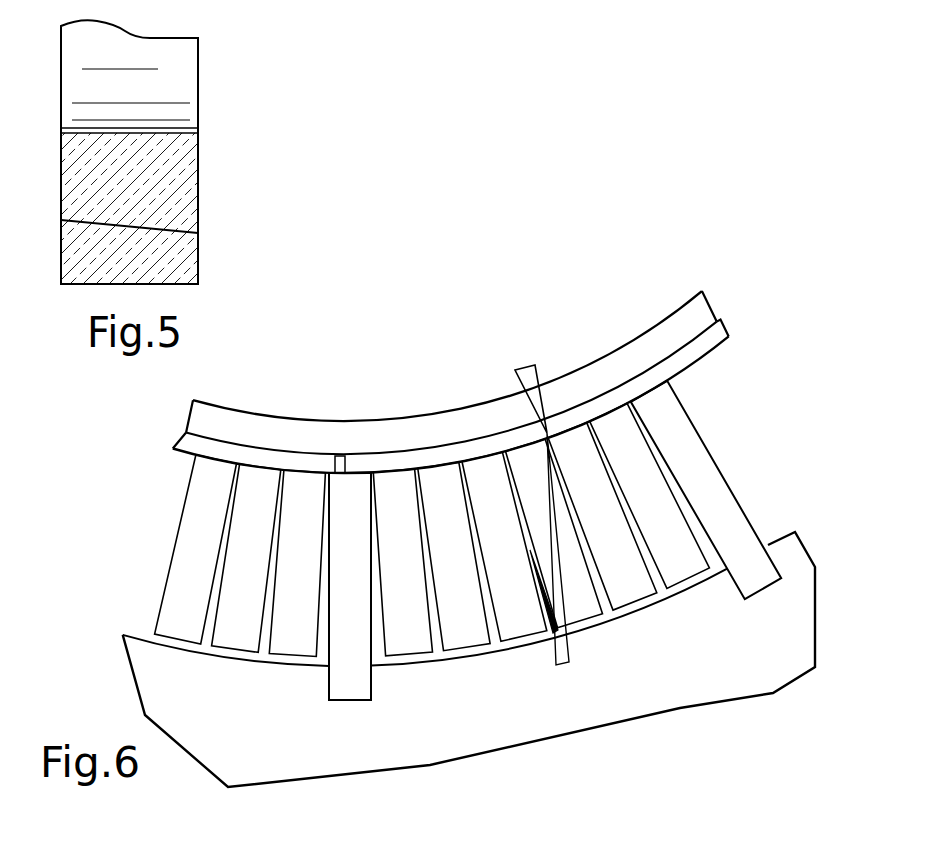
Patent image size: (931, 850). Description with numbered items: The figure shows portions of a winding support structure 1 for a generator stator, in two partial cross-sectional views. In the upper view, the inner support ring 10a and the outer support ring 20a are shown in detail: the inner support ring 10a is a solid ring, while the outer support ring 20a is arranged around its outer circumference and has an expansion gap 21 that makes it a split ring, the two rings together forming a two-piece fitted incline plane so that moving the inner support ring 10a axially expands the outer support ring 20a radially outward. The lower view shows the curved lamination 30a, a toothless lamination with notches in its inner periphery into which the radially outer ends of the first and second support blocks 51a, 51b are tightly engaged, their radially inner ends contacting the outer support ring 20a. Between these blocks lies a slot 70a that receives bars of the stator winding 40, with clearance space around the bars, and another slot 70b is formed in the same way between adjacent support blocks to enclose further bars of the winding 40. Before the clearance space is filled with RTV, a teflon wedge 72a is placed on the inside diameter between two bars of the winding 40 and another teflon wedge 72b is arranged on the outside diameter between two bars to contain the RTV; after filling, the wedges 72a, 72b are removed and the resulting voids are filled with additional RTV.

In FIG. 6, the winding support structure 1 is at (438, 334).
In FIG. 5, the inner support ring 10a is at (183, 187).
In FIG. 6, the inner support ring 10a is at (638, 357).
In FIG. 5, the outer support ring 20a is at (160, 260).
In FIG. 6, the outer support ring 20a is at (722, 338).
In FIG. 6, the expansion gap 21 is at (339, 455).
In FIG. 6, the lamination 30a is at (450, 738).
In FIG. 6, the stator winding 40 is at (628, 578).
In FIG. 6, the first support block 51a is at (760, 575).
In FIG. 6, the second support block 51b is at (340, 683).
In FIG. 6, the slot 70a is at (493, 638).
In FIG. 6, the another slot 70b is at (260, 650).
In FIG. 6, the teflon wedge 72a is at (525, 368).
In FIG. 6, the teflon wedge 72b is at (565, 667).